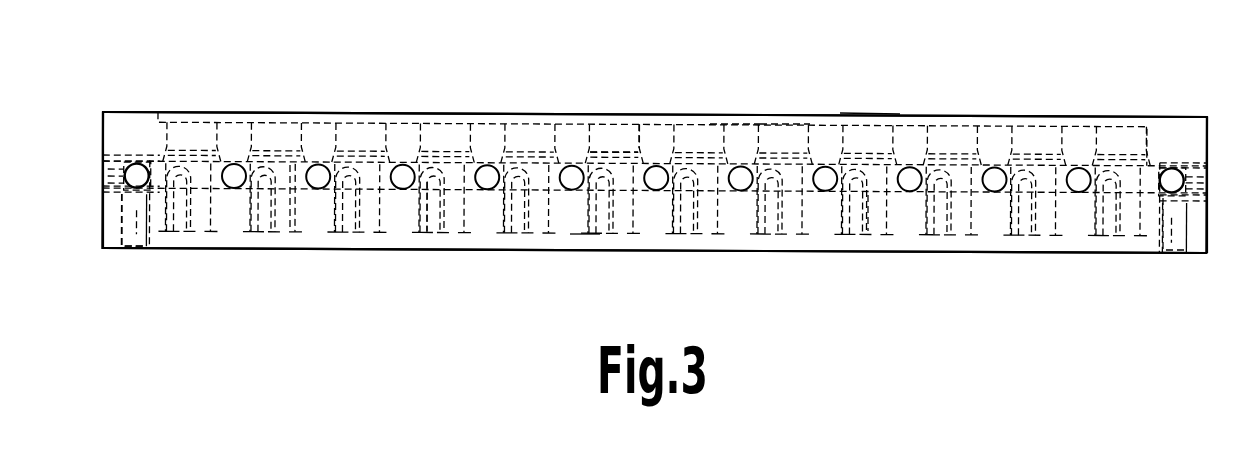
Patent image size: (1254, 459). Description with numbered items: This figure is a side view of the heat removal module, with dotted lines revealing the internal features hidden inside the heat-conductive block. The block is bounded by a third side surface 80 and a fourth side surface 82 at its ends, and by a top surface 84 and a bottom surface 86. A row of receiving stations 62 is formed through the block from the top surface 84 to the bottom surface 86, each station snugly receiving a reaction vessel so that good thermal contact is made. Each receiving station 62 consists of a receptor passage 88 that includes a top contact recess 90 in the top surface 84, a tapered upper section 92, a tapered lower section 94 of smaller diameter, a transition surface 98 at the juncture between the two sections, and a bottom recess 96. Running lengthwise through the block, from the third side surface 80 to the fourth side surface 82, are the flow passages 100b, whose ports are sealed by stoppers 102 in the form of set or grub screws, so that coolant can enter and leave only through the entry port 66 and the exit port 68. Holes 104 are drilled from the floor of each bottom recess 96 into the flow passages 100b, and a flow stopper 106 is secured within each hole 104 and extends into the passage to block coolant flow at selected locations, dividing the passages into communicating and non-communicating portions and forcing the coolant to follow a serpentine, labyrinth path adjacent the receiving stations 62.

The receiving station 62 is at (870, 102).
The entry port 66 is at (141, 250).
The exit port 68 is at (1168, 252).
The third side surface 80 is at (1207, 144).
The fourth side surface 82 is at (103, 140).
The top surface 84 is at (486, 114).
The bottom surface 86 is at (655, 251).
The receptor passage 88 is at (790, 128).
The top contact recess 90 is at (733, 122).
The upper section 92 is at (640, 146).
The lower section 94 is at (872, 213).
The bottom recess 96 is at (580, 233).
The transition surface 98 is at (600, 150).
The flow passage 100b is at (287, 182).
The stopper 102 is at (996, 167).
The hole 104 is at (233, 164).
The flow stopper 106 is at (428, 200).